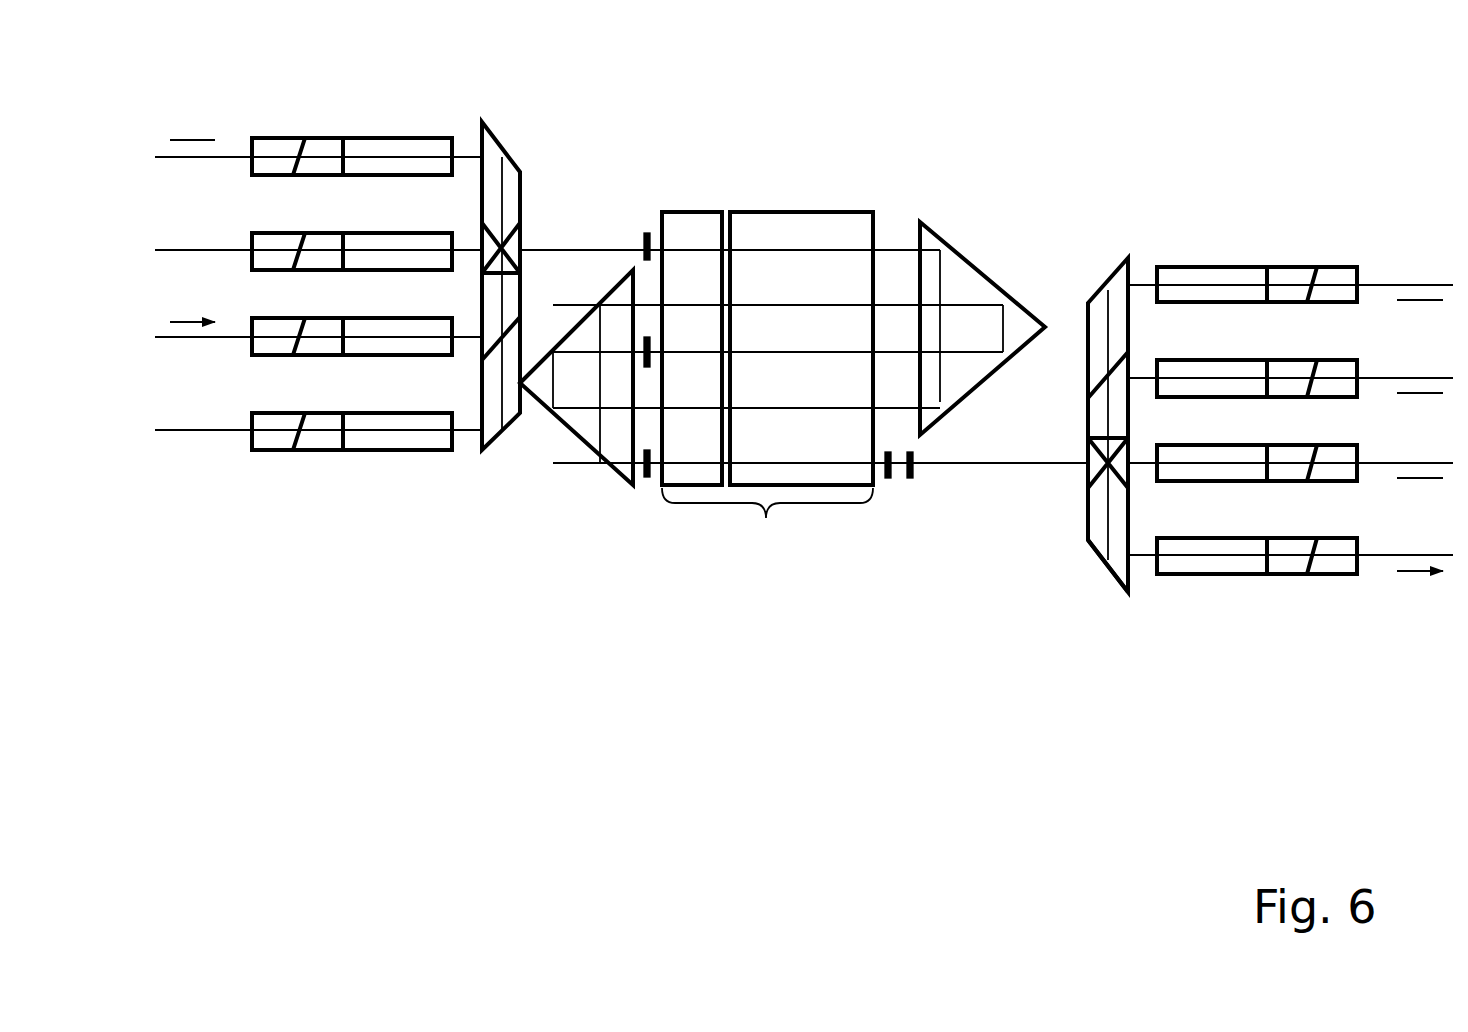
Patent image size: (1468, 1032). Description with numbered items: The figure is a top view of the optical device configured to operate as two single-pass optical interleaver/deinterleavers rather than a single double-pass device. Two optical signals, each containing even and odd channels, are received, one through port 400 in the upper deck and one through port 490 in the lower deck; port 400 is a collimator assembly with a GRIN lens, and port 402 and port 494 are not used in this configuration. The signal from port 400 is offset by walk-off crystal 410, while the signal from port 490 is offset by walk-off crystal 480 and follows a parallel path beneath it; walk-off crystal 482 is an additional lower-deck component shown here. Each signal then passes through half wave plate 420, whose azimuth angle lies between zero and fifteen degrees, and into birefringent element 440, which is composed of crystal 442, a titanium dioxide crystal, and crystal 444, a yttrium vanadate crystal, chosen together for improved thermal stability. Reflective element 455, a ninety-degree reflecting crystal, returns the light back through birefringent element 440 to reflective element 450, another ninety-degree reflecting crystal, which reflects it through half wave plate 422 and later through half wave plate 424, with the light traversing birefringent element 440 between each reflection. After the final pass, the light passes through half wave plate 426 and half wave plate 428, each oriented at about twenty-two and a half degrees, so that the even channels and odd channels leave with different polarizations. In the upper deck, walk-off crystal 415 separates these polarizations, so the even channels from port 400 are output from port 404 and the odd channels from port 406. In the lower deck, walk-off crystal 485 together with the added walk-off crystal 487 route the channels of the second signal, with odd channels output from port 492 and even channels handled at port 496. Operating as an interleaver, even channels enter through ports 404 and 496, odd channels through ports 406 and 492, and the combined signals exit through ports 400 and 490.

The port 400 is at (372, 135).
The port 402 is at (328, 232).
The port 490 is at (337, 318).
The port 494 is at (337, 467).
The walk-off crystal 410 is at (508, 145).
The walk-off crystal 482 is at (486, 455).
The walk-off crystal 480 is at (524, 302).
The half wave plate 420 is at (645, 225).
The half wave plate 422 is at (640, 330).
The half wave plate 424 is at (641, 490).
The reflective element 450 is at (576, 443).
The crystal 442 is at (700, 212).
The crystal 444 is at (800, 207).
The birefringent element 440 is at (765, 523).
The half wave plate 426 is at (886, 483).
The half wave plate 428 is at (912, 483).
The reflective element 455 is at (1003, 277).
The walk-off crystal 487 is at (1113, 262).
The walk-off crystal 485 is at (1086, 421).
The walk-off crystal 415 is at (1088, 556).
The port 496 is at (1275, 265).
The port 492 is at (1232, 366).
The port 404 is at (1232, 447).
The port 406 is at (1230, 578).